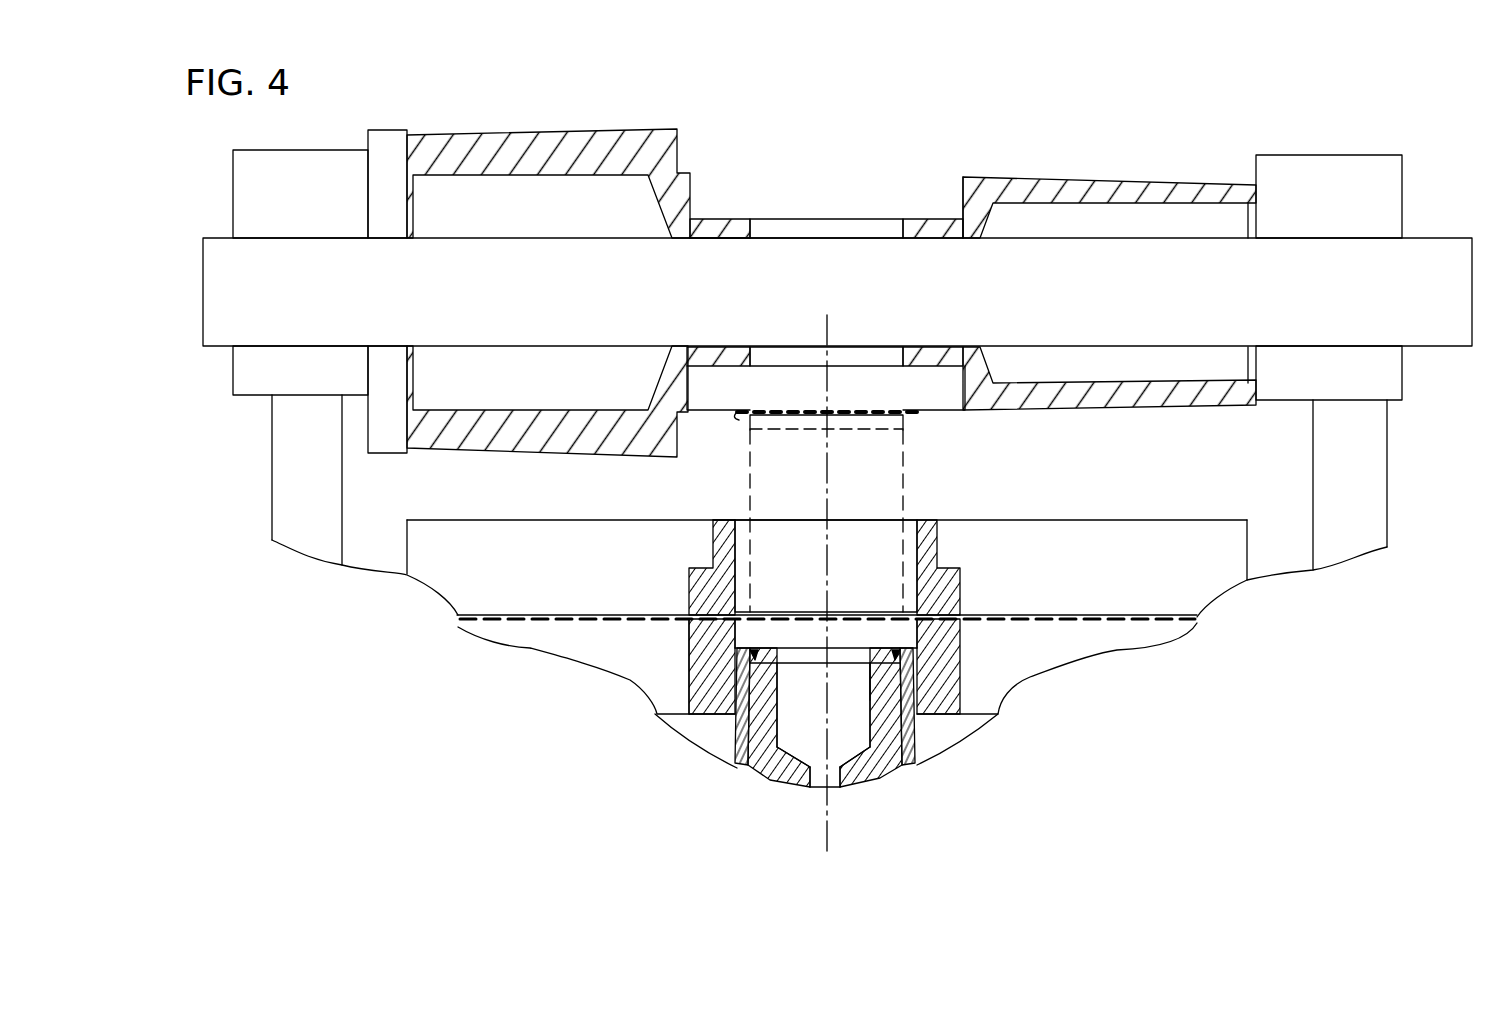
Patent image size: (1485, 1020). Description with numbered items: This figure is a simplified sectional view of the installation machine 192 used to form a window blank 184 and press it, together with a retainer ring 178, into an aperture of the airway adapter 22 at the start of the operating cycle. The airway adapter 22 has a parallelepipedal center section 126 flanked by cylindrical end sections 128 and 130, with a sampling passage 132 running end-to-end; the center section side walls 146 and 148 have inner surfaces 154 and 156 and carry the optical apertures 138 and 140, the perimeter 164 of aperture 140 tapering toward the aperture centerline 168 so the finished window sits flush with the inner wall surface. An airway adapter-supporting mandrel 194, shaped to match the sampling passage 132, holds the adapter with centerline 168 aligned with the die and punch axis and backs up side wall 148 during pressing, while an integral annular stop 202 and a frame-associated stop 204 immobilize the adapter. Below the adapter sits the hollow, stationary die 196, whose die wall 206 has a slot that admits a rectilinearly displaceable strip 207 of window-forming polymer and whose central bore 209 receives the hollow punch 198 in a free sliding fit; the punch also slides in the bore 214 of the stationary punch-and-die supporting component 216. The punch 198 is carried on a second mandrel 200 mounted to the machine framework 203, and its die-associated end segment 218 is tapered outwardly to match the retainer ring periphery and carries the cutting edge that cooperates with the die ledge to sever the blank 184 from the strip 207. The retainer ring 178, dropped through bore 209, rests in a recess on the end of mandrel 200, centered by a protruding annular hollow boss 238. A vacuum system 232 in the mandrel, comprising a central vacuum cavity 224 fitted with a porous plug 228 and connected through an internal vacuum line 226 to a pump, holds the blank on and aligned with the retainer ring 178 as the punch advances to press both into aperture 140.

The airway adapter 22 is at (992, 147).
The center section 126 is at (938, 222).
The left-hand end section 128 is at (576, 129).
The right-hand end section 130 is at (1140, 178).
The sampling passage 132 is at (955, 240).
The aperture 138 is at (905, 226).
The aperture 140 is at (802, 347).
The side wall 146 is at (720, 214).
The side wall 148 is at (716, 374).
The inner surface 154 is at (735, 232).
The inner surface 156 is at (725, 346).
The perimeter 164 is at (902, 358).
The centerline 168 is at (830, 390).
The retainer ring 178 is at (905, 415).
The blank 184 is at (737, 412).
The installation machine 192 is at (450, 634).
The airway adapter-supporting mandrel 194 is at (586, 302).
The die 196 is at (680, 595).
The hollow punch 198 is at (881, 761).
The punch-supporting mandrel 200 is at (895, 768).
The annular stop 202 is at (398, 130).
The machine framework 203 is at (228, 192).
The frame-associated stop 204 is at (1290, 155).
The die wall 206 is at (960, 582).
The strip 207 is at (532, 615).
The central bore 209 is at (917, 578).
The bore 214 is at (750, 742).
The punch-and-die supporting component 216 is at (962, 760).
The die-associated end segment 218 is at (710, 668).
The vacuum cavity 224 is at (872, 690).
The vacuum line 226 is at (832, 780).
The porous plug 228 is at (778, 768).
The vacuum system 232 is at (812, 800).
The annular boss 238 is at (773, 647).